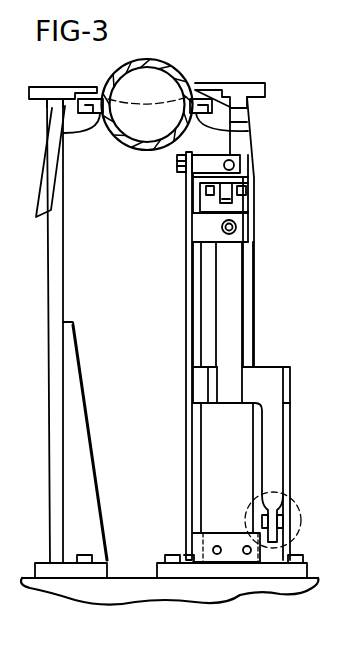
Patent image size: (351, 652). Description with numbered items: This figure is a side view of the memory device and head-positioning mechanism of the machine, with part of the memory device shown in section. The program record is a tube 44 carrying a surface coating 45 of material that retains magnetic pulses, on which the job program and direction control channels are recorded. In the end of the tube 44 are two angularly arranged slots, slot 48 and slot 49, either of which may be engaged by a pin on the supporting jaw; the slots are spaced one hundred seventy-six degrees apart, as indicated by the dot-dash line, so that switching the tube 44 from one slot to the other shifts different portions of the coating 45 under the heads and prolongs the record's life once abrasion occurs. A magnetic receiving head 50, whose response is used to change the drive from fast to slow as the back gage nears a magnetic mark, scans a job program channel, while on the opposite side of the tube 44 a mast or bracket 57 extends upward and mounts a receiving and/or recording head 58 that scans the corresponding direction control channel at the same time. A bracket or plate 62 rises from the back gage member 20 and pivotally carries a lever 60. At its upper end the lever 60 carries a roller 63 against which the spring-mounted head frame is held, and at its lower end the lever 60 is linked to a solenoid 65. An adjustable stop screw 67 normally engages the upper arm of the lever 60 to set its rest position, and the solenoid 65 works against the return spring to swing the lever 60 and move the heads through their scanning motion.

The back gage member 20 is at (152, 592).
The tube 44 is at (148, 145).
The surface coating 45 is at (161, 59).
The slot 48 is at (185, 80).
The slot 49 is at (104, 83).
The magnetic receiving head 50 is at (248, 131).
The mast or bracket 57 is at (50, 258).
The receiving and/or recording head 58 is at (64, 133).
The lever 60 is at (268, 442).
The bracket or plate 62 is at (190, 292).
The roller 63 is at (231, 192).
The solenoid 65 is at (294, 516).
The adjustable stop screw 67 is at (233, 228).